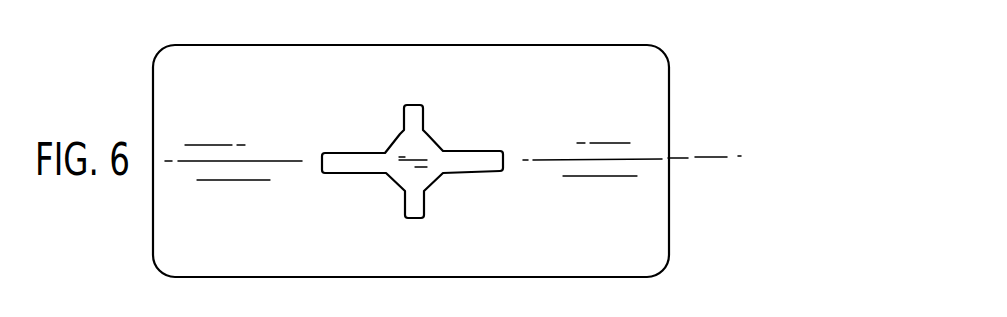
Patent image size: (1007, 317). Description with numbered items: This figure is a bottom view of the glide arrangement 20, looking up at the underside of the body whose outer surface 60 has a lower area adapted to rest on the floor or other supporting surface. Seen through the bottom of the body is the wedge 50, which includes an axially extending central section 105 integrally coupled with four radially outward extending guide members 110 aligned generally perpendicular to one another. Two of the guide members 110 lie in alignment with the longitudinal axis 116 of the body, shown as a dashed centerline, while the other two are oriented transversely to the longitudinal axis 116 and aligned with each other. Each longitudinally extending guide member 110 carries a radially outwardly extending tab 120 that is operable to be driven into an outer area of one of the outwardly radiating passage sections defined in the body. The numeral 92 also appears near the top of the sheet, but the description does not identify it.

The glide arrangement 20 is at (686, 46).
The cover 92 is at (389, 11).
The wedge 50 is at (427, 122).
The guide members 110 is at (422, 104).
The tab 120 is at (333, 153).
The central section 105 is at (403, 174).
The outer surface 60 is at (612, 112).
The longitudinal axis 116 is at (753, 153).